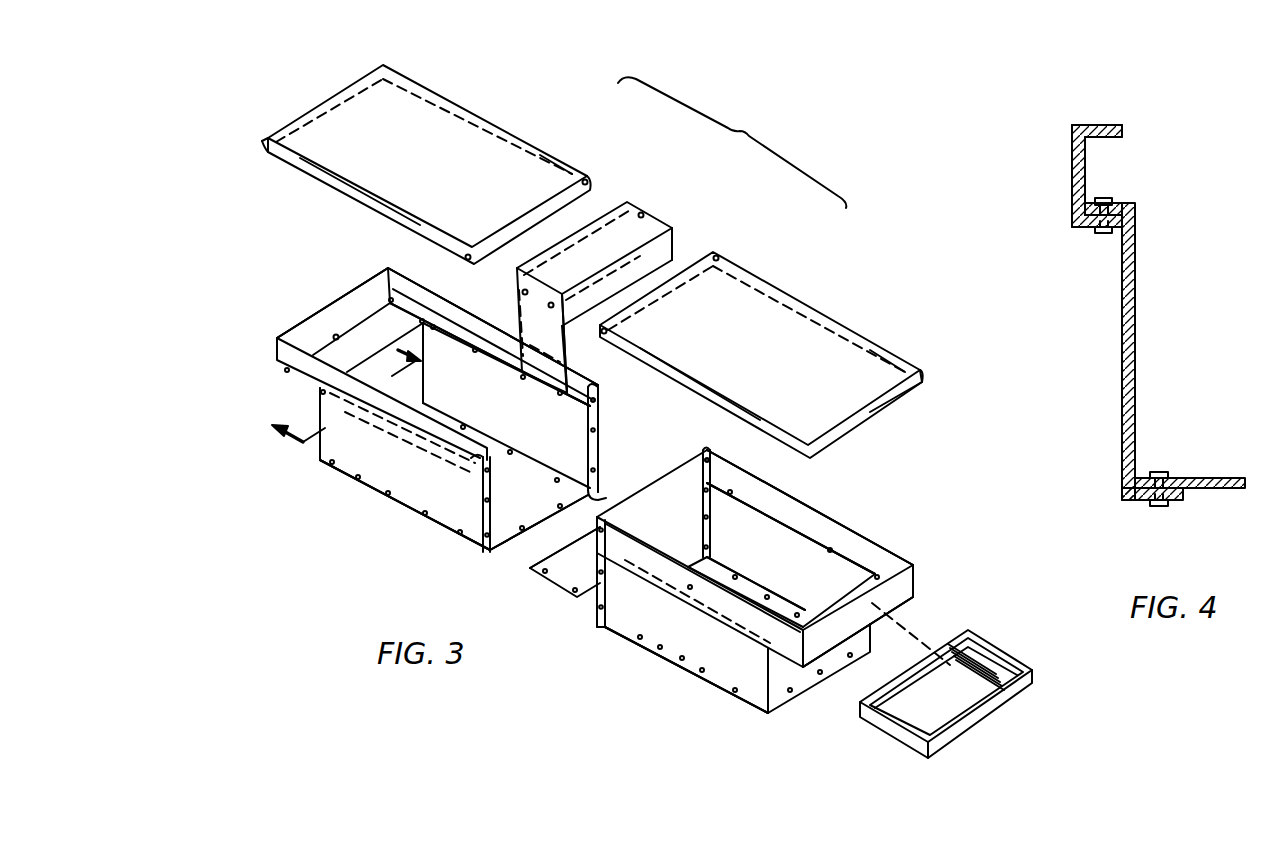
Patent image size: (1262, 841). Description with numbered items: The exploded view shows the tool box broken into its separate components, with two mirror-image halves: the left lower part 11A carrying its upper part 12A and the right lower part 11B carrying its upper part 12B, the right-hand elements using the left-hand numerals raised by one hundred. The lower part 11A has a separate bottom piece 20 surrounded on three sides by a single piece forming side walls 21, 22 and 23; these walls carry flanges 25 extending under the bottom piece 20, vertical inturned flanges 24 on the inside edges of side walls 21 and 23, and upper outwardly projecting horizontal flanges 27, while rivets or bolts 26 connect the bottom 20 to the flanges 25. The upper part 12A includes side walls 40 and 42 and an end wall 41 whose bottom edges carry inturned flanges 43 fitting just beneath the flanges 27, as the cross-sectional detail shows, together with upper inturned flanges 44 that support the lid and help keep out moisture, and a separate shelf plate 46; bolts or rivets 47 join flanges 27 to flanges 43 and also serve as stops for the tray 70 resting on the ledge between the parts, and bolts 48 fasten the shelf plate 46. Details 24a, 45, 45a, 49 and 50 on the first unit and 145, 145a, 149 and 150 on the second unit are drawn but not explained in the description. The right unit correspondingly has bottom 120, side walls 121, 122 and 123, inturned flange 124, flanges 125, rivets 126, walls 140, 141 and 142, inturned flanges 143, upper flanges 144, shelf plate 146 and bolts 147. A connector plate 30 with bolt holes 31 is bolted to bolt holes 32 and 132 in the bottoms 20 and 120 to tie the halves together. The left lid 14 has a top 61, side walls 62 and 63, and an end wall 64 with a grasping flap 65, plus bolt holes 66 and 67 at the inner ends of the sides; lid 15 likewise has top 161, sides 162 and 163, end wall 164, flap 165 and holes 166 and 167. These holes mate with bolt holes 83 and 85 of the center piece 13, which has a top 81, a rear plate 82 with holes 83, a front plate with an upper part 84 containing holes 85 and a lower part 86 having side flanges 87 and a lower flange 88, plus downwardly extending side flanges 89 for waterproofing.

In FIG. 3, the center piece 13 is at (649, 196).
In FIG. 3, the left hand lid 14 is at (408, 167).
In FIG. 3, the right hand lid 15 is at (742, 350).
In FIG. 3, the bottom piece 20 is at (505, 505).
In FIG. 4, the bottom piece 20 is at (1210, 477).
In FIG. 3, the side wall 21 is at (375, 480).
In FIG. 4, the side wall 21 is at (1122, 367).
In FIG. 3, the side wall 22 is at (417, 378).
In FIG. 3, the side wall 23 is at (485, 417).
In FIG. 3, the vertical inturned flanges 24 is at (588, 460).
In FIG. 3, the end flange 24a is at (598, 458).
In FIG. 3, the flanges 25 is at (602, 499).
In FIG. 4, the flanges 25 is at (1142, 501).
In FIG. 3, the rivets or bolts 26 is at (509, 450).
In FIG. 4, the rivets or bolts 26 is at (1160, 471).
In FIG. 3, the upper outwardly projecting horizontal flanges 27 is at (478, 368).
In FIG. 4, the upper outwardly projecting horizontal flanges 27 is at (1120, 203).
In FIG. 3, the connector plate 30 is at (545, 586).
In FIG. 3, the bolt holes 31 is at (572, 560).
In FIG. 3, the bolt holes 32 is at (521, 540).
In FIG. 3, the side wall 40 is at (392, 425).
In FIG. 4, the side wall 40 is at (1072, 174).
In FIG. 3, the end wall 41 is at (345, 313).
In FIG. 3, the side wall 42 is at (450, 300).
In FIG. 3, the inturned flanges 43 is at (598, 416).
In FIG. 4, the inturned flanges 43 is at (1083, 230).
In FIG. 3, the upper inturned flanges 44 is at (594, 386).
In FIG. 4, the upper inturned flanges 44 is at (1085, 124).
In FIG. 3, the end flange 45 is at (599, 400).
In FIG. 3, the end flange 45a is at (481, 474).
In FIG. 3, the shelf plate 46 is at (360, 345).
In FIG. 3, the bolts or rivets 47 is at (478, 373).
In FIG. 4, the bolts or rivets 47 is at (1105, 197).
In FIG. 3, the bolts or rivets 48 is at (333, 338).
In FIG. 3, the hole 49 is at (598, 396).
In FIG. 3, the hook 50 is at (470, 463).
In FIG. 3, the top 61 is at (449, 118).
In FIG. 3, the side wall 62 is at (347, 195).
In FIG. 3, the side 63 is at (556, 174).
In FIG. 3, the end wall 64 is at (336, 107).
In FIG. 3, the outwardly turned flap 65 is at (265, 143).
In FIG. 3, the bolt hole 66 is at (467, 250).
In FIG. 3, the bolt hole 67 is at (592, 184).
In FIG. 3, the tray 70 is at (995, 658).
In FIG. 3, the top 81 is at (568, 263).
In FIG. 3, the rear plate 82 is at (676, 246).
In FIG. 3, the bolt holes 83 is at (648, 218).
In FIG. 3, the upper part of front plate 84 is at (519, 291).
In FIG. 3, the bolt holes 85 is at (555, 305).
In FIG. 3, the lower part of front plate 86 is at (530, 345).
In FIG. 3, the side flanges 87 is at (566, 318).
In FIG. 3, the lower flange 88 is at (572, 400).
In FIG. 3, the side flanges 89 is at (562, 247).
In FIG. 3, the lower part 11A is at (358, 495).
In FIG. 3, the lower part 11B is at (638, 670).
In FIG. 3, the upper part 12A is at (268, 359).
In FIG. 3, the upper part 12B is at (933, 573).
In FIG. 3, the bottom 120 is at (738, 578).
In FIG. 3, the side wall 121 is at (640, 622).
In FIG. 3, the side wall 122 is at (805, 688).
In FIG. 3, the side wall 123 is at (768, 570).
In FIG. 3, the flange 124 is at (702, 515).
In FIG. 3, the flanges 125 is at (603, 628).
In FIG. 3, the rivets or bolts 126 is at (849, 599).
In FIG. 3, the bolt holes 132 is at (684, 592).
In FIG. 3, the side wall 140 is at (760, 708).
In FIG. 3, the end wall 141 is at (852, 628).
In FIG. 3, the side wall 142 is at (881, 558).
In FIG. 3, the inturned flanges 143 is at (766, 645).
In FIG. 3, the upper inturned flanges 144 is at (846, 527).
In FIG. 3, the end flange 145 is at (703, 456).
In FIG. 3, the end flange 145a is at (703, 472).
In FIG. 3, the shelf plate 146 is at (922, 601).
In FIG. 3, the bolts or rivets 147 is at (788, 521).
In FIG. 3, the hole 149 is at (711, 456).
In FIG. 3, the end flange 150 is at (597, 586).
In FIG. 3, the top 161 is at (762, 305).
In FIG. 3, the side 162 is at (735, 408).
In FIG. 3, the side 163 is at (847, 327).
In FIG. 3, the end wall 164 is at (920, 371).
In FIG. 3, the outwardly turned flap 165 is at (918, 388).
In FIG. 3, the bolt hole 166 is at (612, 330).
In FIG. 3, the bolt hole 167 is at (725, 255).